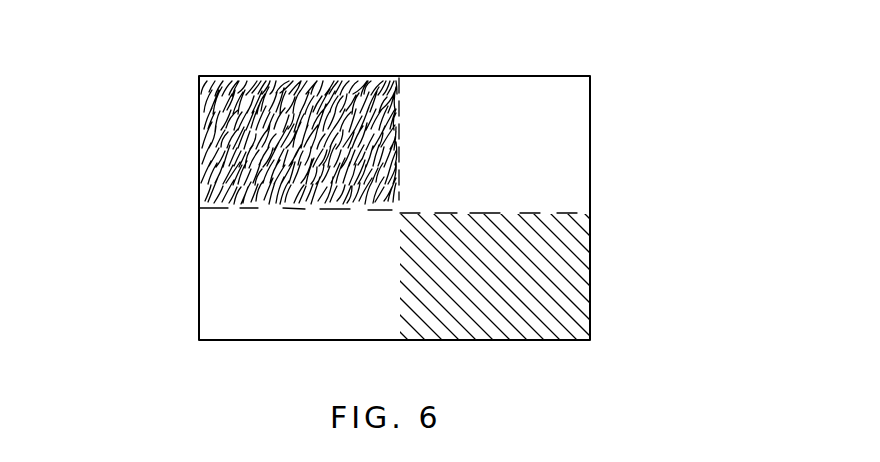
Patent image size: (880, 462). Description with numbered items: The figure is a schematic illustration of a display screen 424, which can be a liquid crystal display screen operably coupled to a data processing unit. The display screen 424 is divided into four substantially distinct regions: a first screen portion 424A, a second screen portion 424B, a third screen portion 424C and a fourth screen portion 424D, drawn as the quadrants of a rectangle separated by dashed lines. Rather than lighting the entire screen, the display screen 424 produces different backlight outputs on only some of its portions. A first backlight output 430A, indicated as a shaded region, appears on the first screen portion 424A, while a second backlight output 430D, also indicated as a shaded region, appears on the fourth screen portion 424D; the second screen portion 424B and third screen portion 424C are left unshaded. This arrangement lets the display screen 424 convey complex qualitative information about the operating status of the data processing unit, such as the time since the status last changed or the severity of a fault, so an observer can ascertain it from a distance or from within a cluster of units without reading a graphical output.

The display screen 424 is at (125, 91).
The first screen portion 424A is at (234, 160).
The second screen portion 424B is at (506, 113).
The third screen portion 424C is at (255, 281).
The fourth screen portion 424D is at (532, 280).
The first backlight output 430A is at (287, 127).
The second backlight output 430D is at (537, 310).